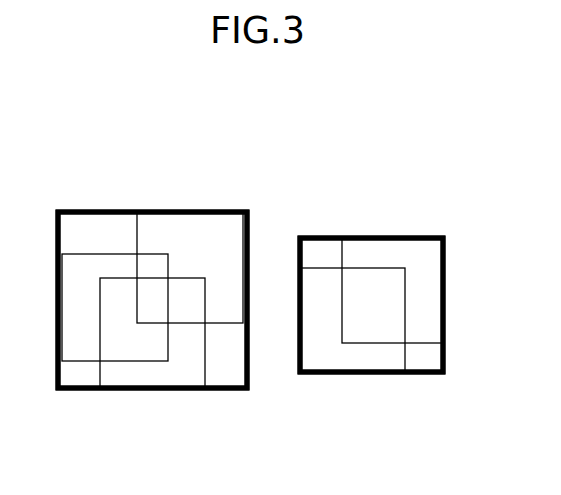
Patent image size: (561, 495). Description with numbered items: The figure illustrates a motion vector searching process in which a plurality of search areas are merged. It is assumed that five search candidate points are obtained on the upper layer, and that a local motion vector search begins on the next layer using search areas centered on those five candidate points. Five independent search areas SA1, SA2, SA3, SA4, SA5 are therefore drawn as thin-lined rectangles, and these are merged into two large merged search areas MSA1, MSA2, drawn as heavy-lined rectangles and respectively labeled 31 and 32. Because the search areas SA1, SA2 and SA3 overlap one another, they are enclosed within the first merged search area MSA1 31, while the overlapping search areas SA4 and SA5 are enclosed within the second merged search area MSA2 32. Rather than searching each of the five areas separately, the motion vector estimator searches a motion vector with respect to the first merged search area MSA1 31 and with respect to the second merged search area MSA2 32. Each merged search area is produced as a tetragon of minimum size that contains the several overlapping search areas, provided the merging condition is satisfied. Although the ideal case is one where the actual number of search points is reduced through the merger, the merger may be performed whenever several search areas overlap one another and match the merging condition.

The first merged search area 31 is at (152, 272).
The second merged search area 32 is at (371, 276).
The merged search area-1 MSA1 is at (152, 286).
The merged search area-2 MSA2 is at (371, 291).
The search area SA1 is at (115, 307).
The search area SA2 is at (152, 333).
The search area SA3 is at (190, 267).
The search area SA4 is at (352, 320).
The search area SA5 is at (392, 290).